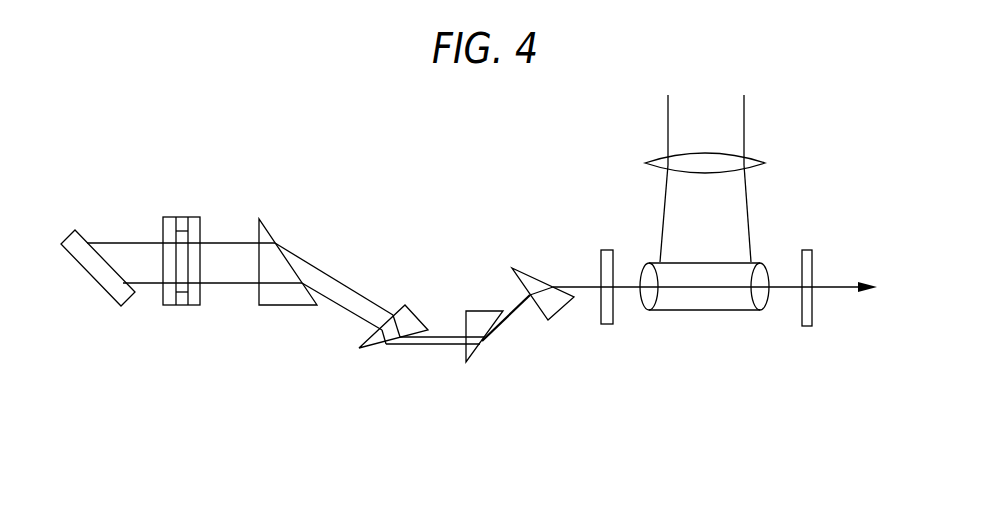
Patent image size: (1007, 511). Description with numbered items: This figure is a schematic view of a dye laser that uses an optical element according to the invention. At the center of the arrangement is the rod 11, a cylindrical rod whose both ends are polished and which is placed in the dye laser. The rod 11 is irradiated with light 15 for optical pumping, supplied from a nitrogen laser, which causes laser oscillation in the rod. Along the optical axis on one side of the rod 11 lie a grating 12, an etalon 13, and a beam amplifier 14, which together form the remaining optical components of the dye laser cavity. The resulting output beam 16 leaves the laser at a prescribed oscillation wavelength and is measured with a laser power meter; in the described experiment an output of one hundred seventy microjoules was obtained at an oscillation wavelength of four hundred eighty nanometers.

The rod 11 is at (720, 329).
The grating 12 is at (100, 296).
The etalon 13 is at (180, 316).
The beam amplifier 14 is at (287, 403).
The light 15 is at (705, 178).
The output beam 16 is at (871, 265).